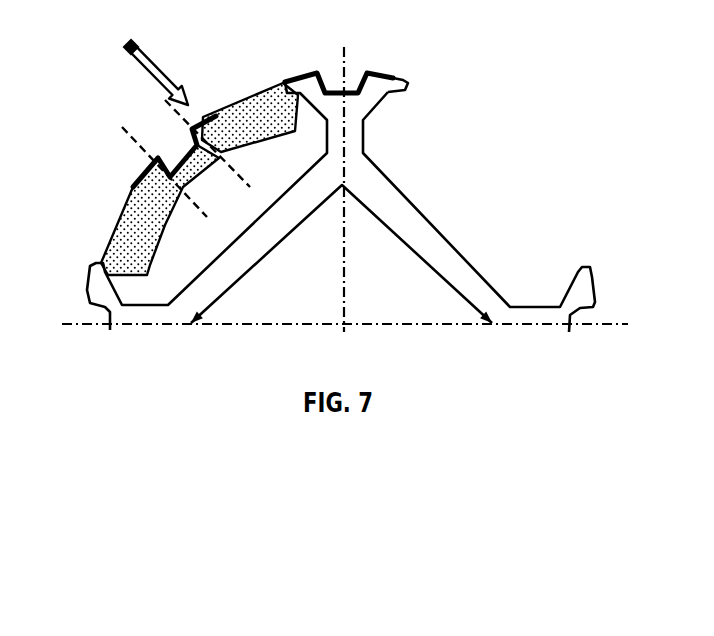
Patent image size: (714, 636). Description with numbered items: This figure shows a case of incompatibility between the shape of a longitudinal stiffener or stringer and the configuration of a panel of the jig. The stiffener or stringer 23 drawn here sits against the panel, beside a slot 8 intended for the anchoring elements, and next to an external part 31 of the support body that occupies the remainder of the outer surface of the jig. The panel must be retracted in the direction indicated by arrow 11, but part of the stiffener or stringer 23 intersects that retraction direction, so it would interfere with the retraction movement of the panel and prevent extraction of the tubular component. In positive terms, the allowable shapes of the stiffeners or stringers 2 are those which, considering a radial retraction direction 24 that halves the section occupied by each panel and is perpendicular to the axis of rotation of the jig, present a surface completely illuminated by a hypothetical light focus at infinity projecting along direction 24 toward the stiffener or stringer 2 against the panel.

The stiffener or stringer 2 is at (290, 67).
The slot 8 is at (238, 96).
The arrow indicating retraction direction 11 is at (155, 54).
The stiffener or stringer 23 is at (150, 157).
The radial retraction direction 24 is at (156, 102).
The external part of the support body area 31 is at (382, 72).